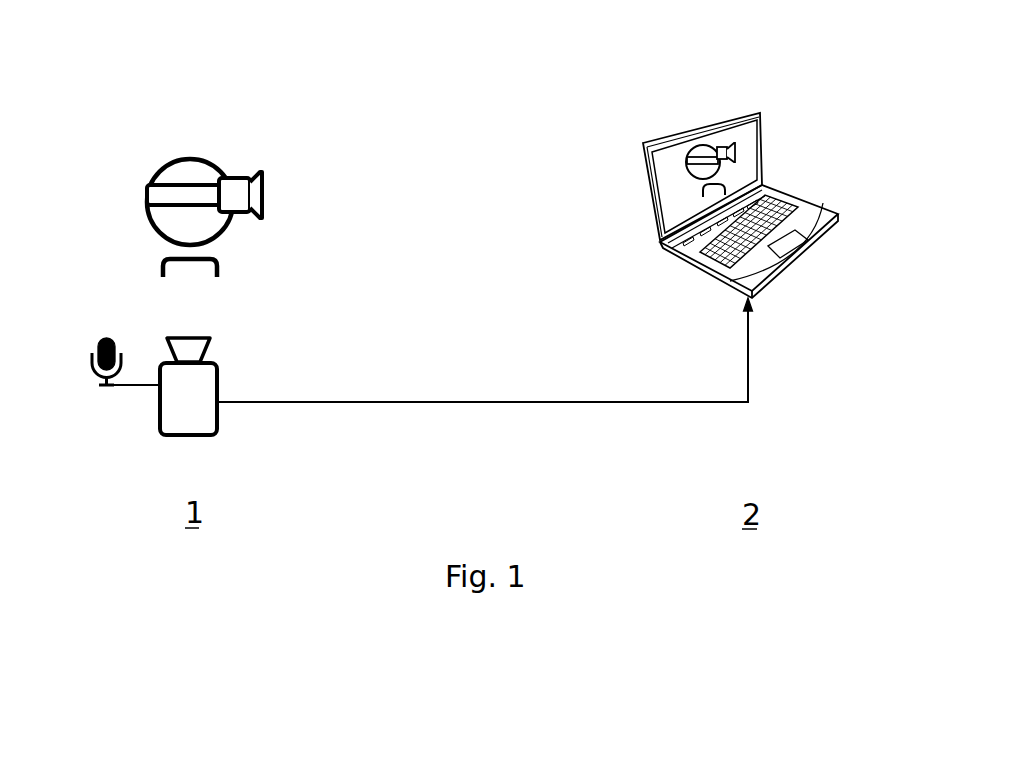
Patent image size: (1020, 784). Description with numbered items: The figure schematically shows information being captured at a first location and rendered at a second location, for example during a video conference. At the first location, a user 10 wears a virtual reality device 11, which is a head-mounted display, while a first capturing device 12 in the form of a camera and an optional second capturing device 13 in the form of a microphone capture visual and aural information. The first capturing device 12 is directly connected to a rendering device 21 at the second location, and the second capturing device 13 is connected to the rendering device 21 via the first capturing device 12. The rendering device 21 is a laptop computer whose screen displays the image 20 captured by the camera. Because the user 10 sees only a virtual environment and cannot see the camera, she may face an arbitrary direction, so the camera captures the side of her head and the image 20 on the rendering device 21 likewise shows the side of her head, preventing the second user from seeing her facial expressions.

The user 10 is at (155, 226).
The virtual reality device 11 is at (255, 168).
The first capturing device 12 is at (153, 413).
The second capturing device 13 is at (93, 357).
The image 20 is at (756, 175).
The rendering device 21 is at (777, 278).